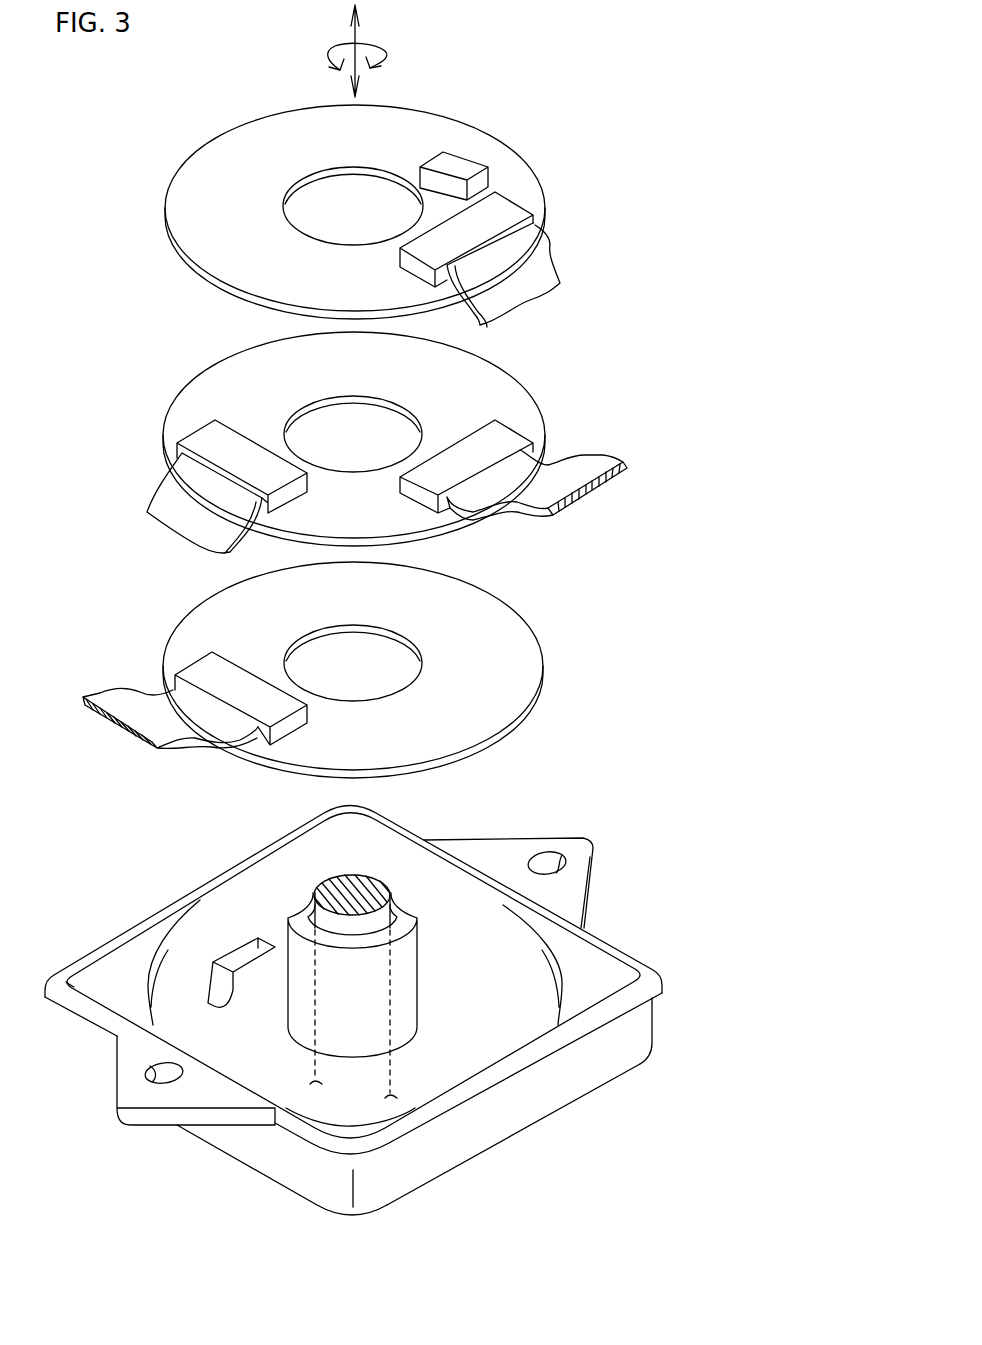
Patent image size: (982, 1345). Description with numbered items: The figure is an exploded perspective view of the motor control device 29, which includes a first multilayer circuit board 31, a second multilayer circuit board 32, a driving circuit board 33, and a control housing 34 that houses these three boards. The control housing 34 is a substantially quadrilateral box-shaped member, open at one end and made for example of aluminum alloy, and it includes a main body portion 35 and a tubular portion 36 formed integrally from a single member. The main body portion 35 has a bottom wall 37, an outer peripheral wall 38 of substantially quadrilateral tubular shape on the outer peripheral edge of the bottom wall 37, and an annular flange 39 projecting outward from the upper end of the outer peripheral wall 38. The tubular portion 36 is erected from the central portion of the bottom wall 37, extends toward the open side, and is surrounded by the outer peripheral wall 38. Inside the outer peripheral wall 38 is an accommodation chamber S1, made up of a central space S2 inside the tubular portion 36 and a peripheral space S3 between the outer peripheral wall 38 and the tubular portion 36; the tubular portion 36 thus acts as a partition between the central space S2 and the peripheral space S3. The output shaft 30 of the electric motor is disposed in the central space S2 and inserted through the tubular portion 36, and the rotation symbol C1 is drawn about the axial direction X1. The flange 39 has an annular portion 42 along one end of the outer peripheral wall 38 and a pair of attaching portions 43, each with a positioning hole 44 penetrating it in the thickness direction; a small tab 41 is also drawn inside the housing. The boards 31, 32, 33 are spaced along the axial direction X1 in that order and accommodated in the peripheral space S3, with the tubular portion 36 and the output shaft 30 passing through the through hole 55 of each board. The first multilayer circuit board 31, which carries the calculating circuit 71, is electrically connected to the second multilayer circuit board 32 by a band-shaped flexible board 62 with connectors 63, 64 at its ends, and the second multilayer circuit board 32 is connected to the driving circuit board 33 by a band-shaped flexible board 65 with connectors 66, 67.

The motor control device 29 is at (613, 685).
The output shaft 30 is at (370, 925).
The first multilayer circuit board 31 is at (513, 168).
The second multilayer circuit board 32 is at (512, 396).
The driving circuit board 33 is at (487, 620).
The control housing 34 is at (315, 1159).
The main body portion 35 is at (427, 1167).
The tubular portion 36 is at (407, 1028).
The bottom wall 37 is at (503, 1032).
The outer peripheral wall 38 is at (583, 1083).
The annular flange 39 is at (625, 1008).
The positioning tab 41 is at (248, 950).
The annular portion 42 is at (73, 983).
The attaching portion 43 is at (573, 888).
The positioning hole 44 is at (555, 860).
The through hole 55 is at (372, 187).
The flexible board 62 is at (537, 263).
The connector 63 is at (503, 208).
The connector 64 is at (478, 443).
The flexible board 65 is at (165, 492).
The connector 66 is at (228, 445).
The connector 67 is at (228, 677).
The calculating circuit 71 is at (455, 160).
The axial direction X1 is at (355, 36).
The rotation direction C1 is at (323, 58).
The accommodation chamber S1 is at (285, 863).
The central space S2 is at (393, 913).
The peripheral space S3 is at (470, 913).